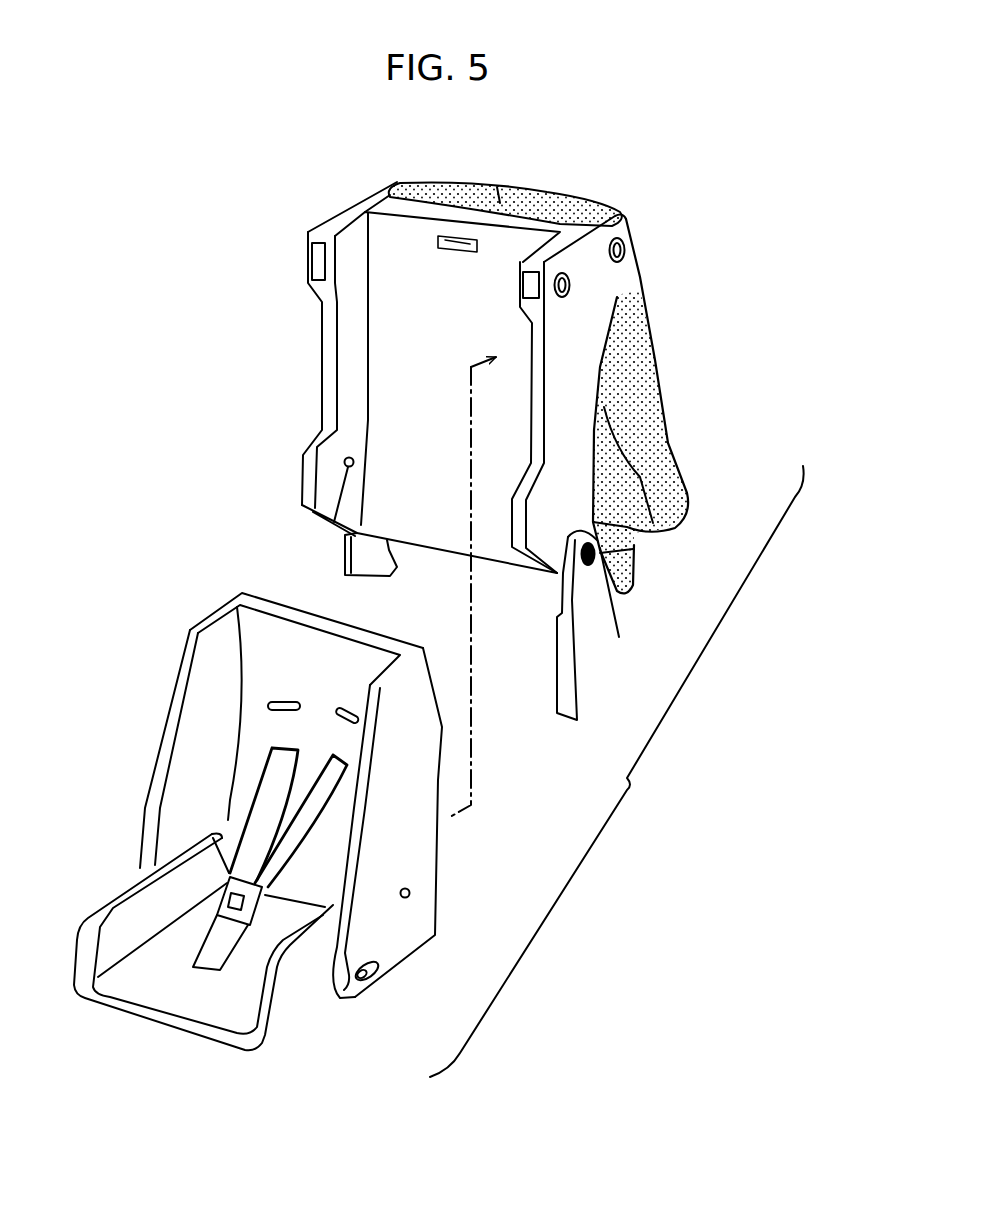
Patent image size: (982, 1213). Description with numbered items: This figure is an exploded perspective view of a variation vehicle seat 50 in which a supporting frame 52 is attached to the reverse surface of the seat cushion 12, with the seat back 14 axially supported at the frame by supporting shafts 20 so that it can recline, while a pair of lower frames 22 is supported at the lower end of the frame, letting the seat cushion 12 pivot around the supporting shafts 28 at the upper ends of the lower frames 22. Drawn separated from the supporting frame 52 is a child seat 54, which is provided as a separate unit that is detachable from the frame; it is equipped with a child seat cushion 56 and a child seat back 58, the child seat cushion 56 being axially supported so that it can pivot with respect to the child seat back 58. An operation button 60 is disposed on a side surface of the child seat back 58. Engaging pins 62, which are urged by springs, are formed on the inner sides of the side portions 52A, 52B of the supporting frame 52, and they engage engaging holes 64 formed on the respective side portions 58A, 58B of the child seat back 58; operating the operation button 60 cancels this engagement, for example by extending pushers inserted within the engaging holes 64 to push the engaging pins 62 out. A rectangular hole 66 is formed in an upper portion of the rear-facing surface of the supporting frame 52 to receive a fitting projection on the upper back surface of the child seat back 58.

The seat cushion 12 is at (634, 567).
The seat back 14 is at (680, 480).
The supporting shaft 20 is at (630, 247).
The lower frame 22 is at (372, 557).
The supporting shaft 28 is at (604, 553).
The vehicle seat 50 is at (617, 771).
The supporting frame 52 is at (318, 362).
The side portion 52A is at (320, 390).
The side portion 52B is at (570, 363).
The child seat 54 is at (182, 621).
The child seat cushion 56 is at (113, 908).
The child seat back 58 is at (175, 713).
The side portion 58A is at (157, 752).
The side portion 58B is at (402, 822).
The operation button 60 is at (376, 980).
The engaging pin 62 is at (335, 522).
The engaging hole 64 is at (411, 893).
The rectangular hole 66 is at (458, 236).